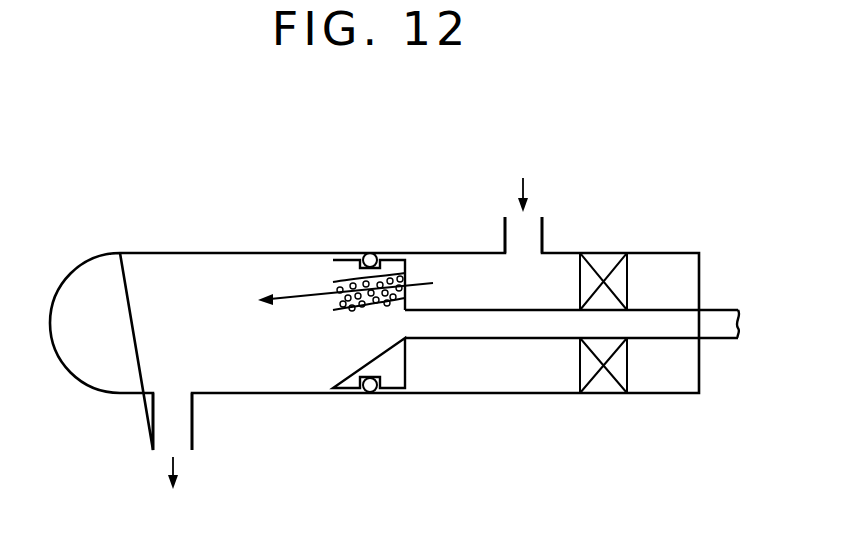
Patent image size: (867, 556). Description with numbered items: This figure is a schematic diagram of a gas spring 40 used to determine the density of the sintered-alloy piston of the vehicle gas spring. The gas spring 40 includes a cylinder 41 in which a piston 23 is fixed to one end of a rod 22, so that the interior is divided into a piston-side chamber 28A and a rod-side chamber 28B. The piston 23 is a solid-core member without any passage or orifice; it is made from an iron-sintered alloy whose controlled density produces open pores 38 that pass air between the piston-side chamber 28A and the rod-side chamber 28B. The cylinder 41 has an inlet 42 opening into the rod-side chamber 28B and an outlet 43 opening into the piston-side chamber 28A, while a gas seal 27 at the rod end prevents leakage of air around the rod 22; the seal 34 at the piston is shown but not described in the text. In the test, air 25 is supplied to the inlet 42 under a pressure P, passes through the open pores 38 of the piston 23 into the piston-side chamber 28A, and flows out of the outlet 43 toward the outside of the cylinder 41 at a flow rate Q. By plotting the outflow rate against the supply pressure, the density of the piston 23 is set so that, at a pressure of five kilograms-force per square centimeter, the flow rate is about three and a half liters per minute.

The gas spring 40 is at (292, 186).
The cylinder 41 is at (215, 252).
The inlet 42 is at (543, 228).
The outlet 43 is at (153, 430).
The rod 22 is at (667, 308).
The piston 23 is at (330, 368).
The air 25 is at (295, 299).
The gas seal 27 is at (605, 387).
The piston-side chamber 28A is at (232, 382).
The rod-side chamber 28B is at (495, 378).
The seal ring 34 is at (372, 253).
The open pores 38 is at (380, 312).